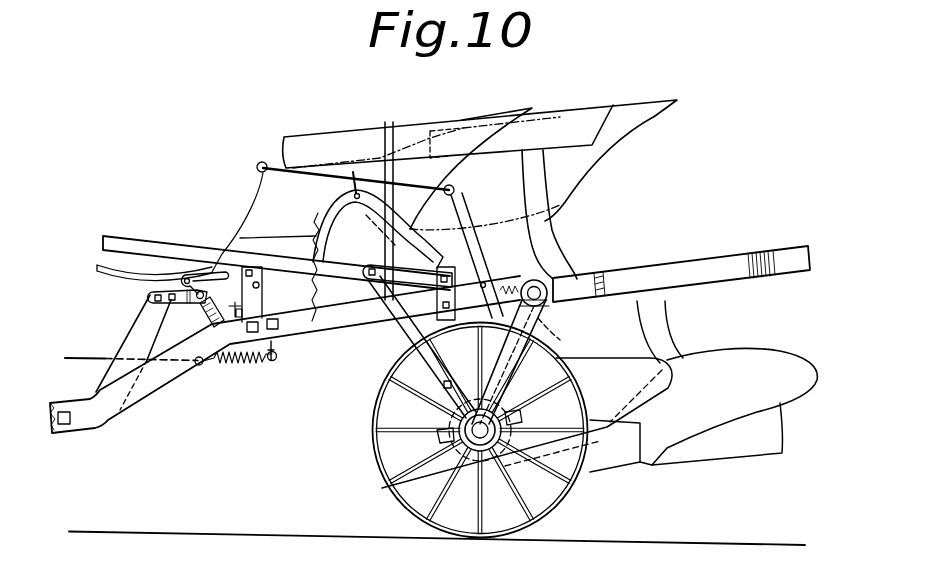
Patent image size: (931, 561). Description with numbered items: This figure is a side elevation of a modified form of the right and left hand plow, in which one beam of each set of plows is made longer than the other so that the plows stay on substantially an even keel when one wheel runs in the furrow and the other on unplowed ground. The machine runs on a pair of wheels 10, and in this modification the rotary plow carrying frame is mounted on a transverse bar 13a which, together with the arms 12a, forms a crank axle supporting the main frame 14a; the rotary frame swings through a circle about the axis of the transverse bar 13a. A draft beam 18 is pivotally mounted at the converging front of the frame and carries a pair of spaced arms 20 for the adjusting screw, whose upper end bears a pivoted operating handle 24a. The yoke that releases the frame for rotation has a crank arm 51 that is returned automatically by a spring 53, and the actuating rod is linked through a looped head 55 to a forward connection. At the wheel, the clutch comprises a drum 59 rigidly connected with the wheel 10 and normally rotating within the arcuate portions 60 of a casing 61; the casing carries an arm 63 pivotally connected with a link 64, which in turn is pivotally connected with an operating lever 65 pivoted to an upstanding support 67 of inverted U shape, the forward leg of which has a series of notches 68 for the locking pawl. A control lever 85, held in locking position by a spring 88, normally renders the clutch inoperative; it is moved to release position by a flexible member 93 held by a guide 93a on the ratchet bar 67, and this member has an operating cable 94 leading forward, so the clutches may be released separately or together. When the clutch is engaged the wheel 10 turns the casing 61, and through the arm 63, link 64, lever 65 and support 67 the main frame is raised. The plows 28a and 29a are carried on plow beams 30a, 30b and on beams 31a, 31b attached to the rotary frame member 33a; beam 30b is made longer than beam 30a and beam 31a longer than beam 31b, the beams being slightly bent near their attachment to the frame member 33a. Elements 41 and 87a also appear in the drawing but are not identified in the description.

The wheel 10 is at (561, 500).
The arm 12a is at (497, 370).
The transverse bar 13a is at (547, 304).
The main frame 14a is at (354, 321).
The draft beam 18 is at (137, 331).
The spaced arms 20 is at (184, 306).
The operating handle 24a is at (214, 256).
The plows 28a is at (793, 358).
The plows 29a is at (501, 113).
The plow beam 30a is at (570, 361).
The plow beam 30b is at (682, 334).
The beam 31a is at (387, 128).
The beam 31b is at (549, 224).
The rotary frame member 33a is at (603, 280).
The bracket plate 41 is at (263, 303).
The crank arm 51 is at (278, 360).
The spring 53 is at (244, 356).
The looped head 55 is at (93, 357).
The drum 59 is at (468, 481).
The arcuate portions 60 is at (522, 418).
The casing 61 is at (440, 437).
The arm 63 is at (450, 401).
The link 64 is at (371, 287).
The operating lever 65 is at (178, 246).
The upstanding support 67 is at (450, 213).
The notches 68 is at (318, 214).
The control lever 85 is at (474, 253).
The arm (alternate position) 87a is at (548, 327).
The spring 88 is at (515, 278).
The flexible member 93 is at (311, 177).
The guide 93a is at (369, 161).
The operating cable 94 is at (242, 232).